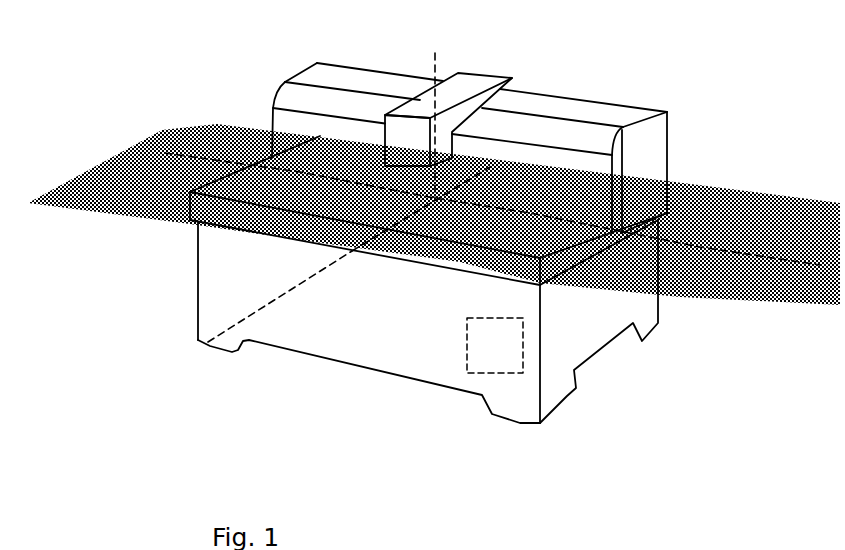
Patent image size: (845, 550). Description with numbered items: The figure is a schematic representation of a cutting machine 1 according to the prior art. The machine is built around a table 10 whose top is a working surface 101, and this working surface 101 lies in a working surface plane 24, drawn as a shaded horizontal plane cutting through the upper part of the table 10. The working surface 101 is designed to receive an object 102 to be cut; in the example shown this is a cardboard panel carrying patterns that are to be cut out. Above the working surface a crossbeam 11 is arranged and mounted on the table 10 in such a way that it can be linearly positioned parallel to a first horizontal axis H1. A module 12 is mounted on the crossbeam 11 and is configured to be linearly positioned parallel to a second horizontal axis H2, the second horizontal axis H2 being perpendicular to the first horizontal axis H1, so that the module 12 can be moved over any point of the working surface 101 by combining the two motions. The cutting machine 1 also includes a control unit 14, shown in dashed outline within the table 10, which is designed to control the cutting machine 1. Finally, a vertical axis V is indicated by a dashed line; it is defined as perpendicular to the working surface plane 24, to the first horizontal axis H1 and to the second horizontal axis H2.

The cutting machine 1 is at (238, 76).
The table 10 is at (312, 239).
The crossbeam 11 is at (563, 143).
The module 12 is at (432, 138).
The control unit 14 is at (510, 356).
The working surface plane 24 is at (783, 237).
The working surface 101 is at (468, 201).
The object to be cut 102 is at (325, 180).
The vertical axis V is at (458, 126).
The first horizontal axis H1 is at (270, 302).
The second horizontal axis H2 is at (451, 268).